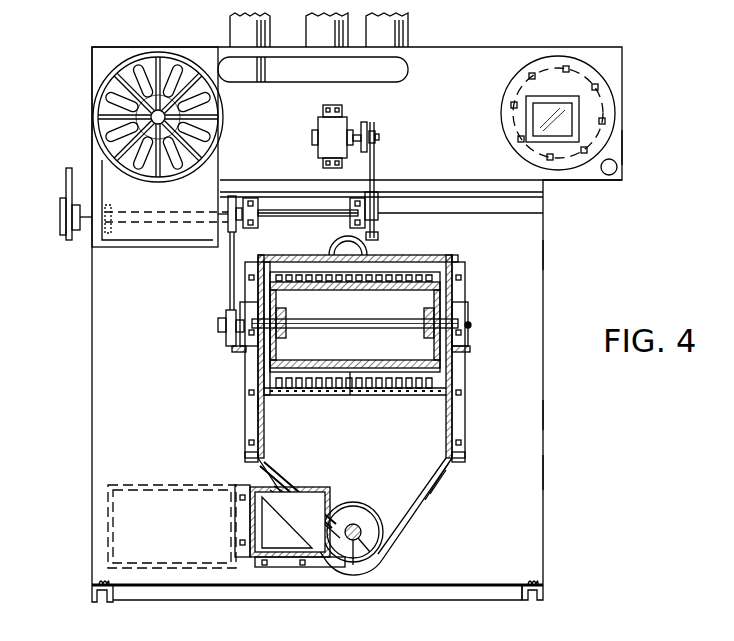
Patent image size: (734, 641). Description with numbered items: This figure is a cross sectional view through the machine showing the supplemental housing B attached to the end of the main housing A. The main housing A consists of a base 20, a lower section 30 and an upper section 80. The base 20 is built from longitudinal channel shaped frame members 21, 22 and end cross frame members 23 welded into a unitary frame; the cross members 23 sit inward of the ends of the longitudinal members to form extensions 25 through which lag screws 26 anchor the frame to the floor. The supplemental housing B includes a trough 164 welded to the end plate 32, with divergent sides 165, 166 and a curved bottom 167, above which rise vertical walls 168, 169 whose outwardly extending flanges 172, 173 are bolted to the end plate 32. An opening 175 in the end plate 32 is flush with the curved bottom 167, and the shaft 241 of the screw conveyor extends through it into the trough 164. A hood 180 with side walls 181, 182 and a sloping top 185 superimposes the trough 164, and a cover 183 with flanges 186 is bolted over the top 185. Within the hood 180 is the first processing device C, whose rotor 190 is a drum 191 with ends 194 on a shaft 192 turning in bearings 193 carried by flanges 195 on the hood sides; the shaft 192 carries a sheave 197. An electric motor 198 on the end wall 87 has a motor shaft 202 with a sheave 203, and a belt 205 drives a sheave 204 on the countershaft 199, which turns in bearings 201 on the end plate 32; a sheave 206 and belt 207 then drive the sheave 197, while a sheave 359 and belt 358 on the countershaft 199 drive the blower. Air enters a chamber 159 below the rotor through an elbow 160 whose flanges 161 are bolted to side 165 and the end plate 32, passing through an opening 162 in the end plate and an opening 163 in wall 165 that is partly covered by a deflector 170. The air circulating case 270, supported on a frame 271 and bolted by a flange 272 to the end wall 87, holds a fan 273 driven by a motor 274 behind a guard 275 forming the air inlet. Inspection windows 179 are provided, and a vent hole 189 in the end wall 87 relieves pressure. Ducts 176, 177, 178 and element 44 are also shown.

The base 20 is at (120, 600).
The longitudinal channel shaped frame member 21 is at (92, 598).
The longitudinal channel shaped frame member 22 is at (545, 596).
The end cross frame member 23 is at (254, 589).
The extension 25 is at (521, 584).
The lag screw 26 is at (101, 581).
The lower section 30 is at (551, 421).
The end plate 32 is at (543, 483).
The roller shaft 44 is at (370, 525).
The upper section 80 is at (630, 151).
The end wall 87 is at (470, 68).
The chamber 159 is at (430, 470).
The elbow 160 is at (252, 525).
The flange 161 is at (240, 508).
The opening 162 is at (268, 538).
The opening 163 is at (296, 508).
The trough 164 is at (410, 516).
The divergent side 165 is at (314, 526).
The divergent side 166 is at (433, 493).
The curved bottom 167 is at (364, 562).
The vertical wall 168 is at (246, 456).
The vertical wall 169 is at (465, 460).
The deflector 170 is at (328, 518).
The outwardly extending flange 172 is at (245, 420).
The outwardly extending flange 173 is at (465, 440).
The opening 175 is at (354, 508).
The duct 176 is at (400, 33).
The duct 177 is at (334, 40).
The duct and slot 178 is at (250, 84).
The inspection window 179 is at (540, 128).
The hood 180 is at (386, 250).
The side wall 181 is at (258, 290).
The side wall 182 is at (452, 297).
The cover 183 is at (344, 239).
The top 185 is at (440, 256).
The flange 186 is at (258, 258).
The vent hole 189 is at (609, 176).
The rotor 190 is at (452, 290).
The drum 191 is at (308, 278).
The shaft 192 is at (404, 320).
The bearing 193 is at (278, 310).
The end 194 is at (248, 310).
The flange 195 is at (238, 350).
The sheave 197 is at (226, 336).
The electric motor 198 is at (325, 132).
The countershaft 199 is at (294, 210).
The bearing 201 is at (249, 198).
The motor shaft 202 is at (379, 137).
The sheave 203 is at (368, 126).
The sheave 204 is at (379, 236).
The belt 205 is at (376, 165).
The sheave 206 is at (228, 208).
The belt 207 is at (231, 266).
The shaft 241 is at (355, 545).
The case 270 is at (102, 78).
The frame 271 is at (154, 242).
The flange 272 is at (220, 124).
The fan 273 is at (122, 87).
The motor 274 is at (106, 158).
The guard 275 is at (108, 115).
The belt 358 is at (66, 172).
The sheave 359 is at (60, 224).
The main housing A is at (552, 259).
The supplemental housing B is at (252, 399).
The first processing device C is at (351, 375).